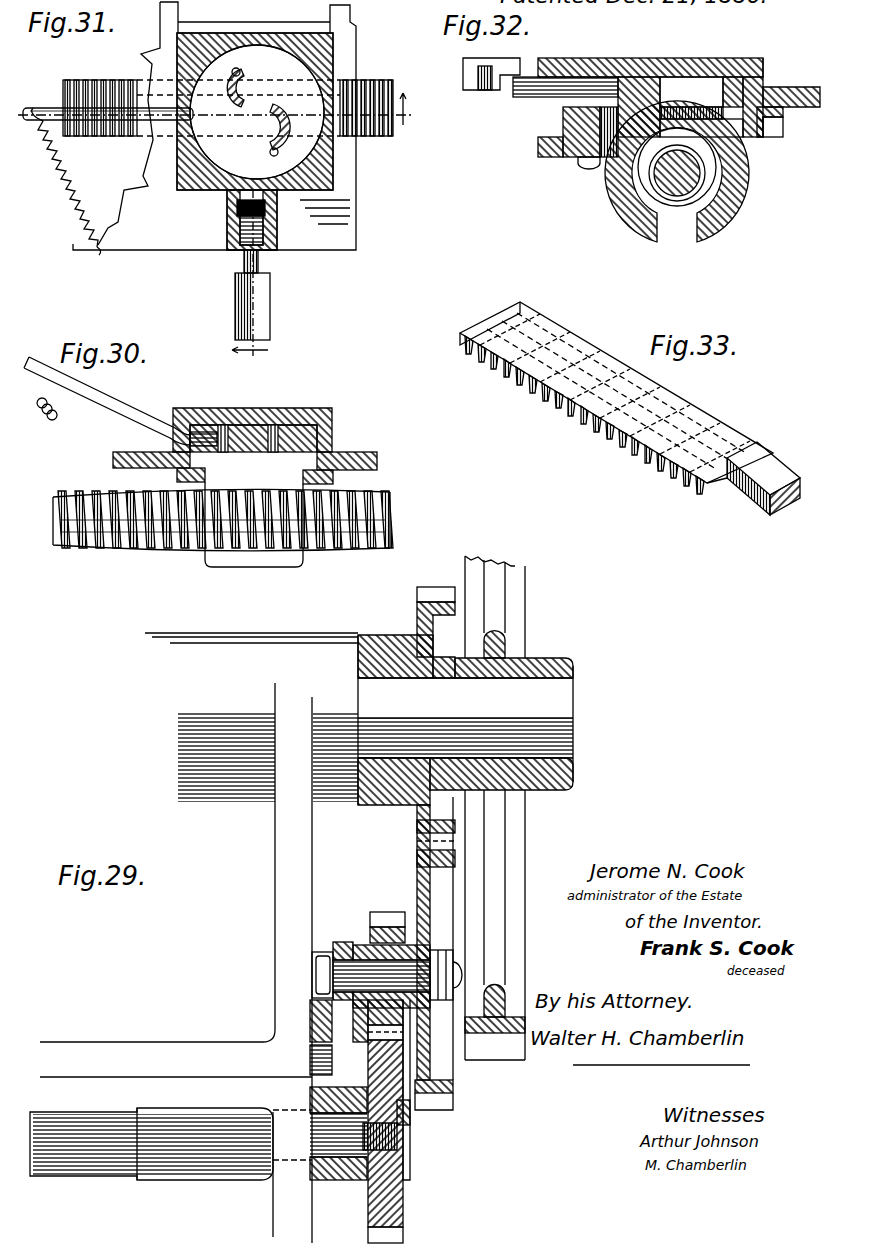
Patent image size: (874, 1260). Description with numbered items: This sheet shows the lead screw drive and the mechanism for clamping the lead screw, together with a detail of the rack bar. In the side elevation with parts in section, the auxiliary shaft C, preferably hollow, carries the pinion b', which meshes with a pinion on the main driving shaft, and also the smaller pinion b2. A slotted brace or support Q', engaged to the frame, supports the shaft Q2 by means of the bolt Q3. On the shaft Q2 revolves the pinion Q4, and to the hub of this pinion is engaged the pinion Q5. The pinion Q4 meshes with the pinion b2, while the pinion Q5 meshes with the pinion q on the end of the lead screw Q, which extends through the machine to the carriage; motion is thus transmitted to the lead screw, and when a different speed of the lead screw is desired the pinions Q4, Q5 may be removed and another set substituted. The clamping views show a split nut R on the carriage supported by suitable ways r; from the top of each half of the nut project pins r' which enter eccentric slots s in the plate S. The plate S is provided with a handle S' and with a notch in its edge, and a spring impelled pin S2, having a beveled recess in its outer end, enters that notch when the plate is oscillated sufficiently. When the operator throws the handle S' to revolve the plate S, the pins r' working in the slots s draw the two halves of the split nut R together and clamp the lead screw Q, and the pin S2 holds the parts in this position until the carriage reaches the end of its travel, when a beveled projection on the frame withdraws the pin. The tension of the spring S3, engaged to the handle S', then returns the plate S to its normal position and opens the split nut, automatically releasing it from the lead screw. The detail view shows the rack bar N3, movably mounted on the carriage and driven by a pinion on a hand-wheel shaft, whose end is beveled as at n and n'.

In FIG. 31, the plate S is at (281, 106).
In FIG. 32, the plate S is at (650, 97).
In FIG. 31, the handle S' is at (203, 123).
In FIG. 30, the handle S' is at (120, 401).
In FIG. 31, the spring impelled pin S2 is at (258, 262).
In FIG. 32, the spring impelled pin S2 is at (532, 85).
In FIG. 31, the spring S3 is at (66, 196).
In FIG. 30, the spring S3 is at (50, 415).
In FIG. 31, the lead screw Q is at (219, 92).
In FIG. 32, the lead screw Q is at (677, 202).
In FIG. 30, the lead screw Q is at (223, 546).
In FIG. 29, the lead screw Q is at (171, 1148).
In FIG. 31, the pins r' is at (307, 131).
In FIG. 32, the pins r' is at (750, 46).
In FIG. 30, the pins r' is at (246, 471).
In FIG. 31, the eccentric slots s is at (258, 133).
In FIG. 32, the eccentric slots s is at (691, 92).
In FIG. 30, the eccentric slots s is at (273, 425).
In FIG. 32, the split nut R is at (748, 170).
In FIG. 30, the split nut R is at (233, 557).
In FIG. 32, the ways r is at (788, 117).
In FIG. 33, the rack bar N3 is at (698, 442).
In FIG. 33, the beveled end n' is at (799, 485).
In FIG. 33, the beveled end n is at (753, 493).
In FIG. 29, the pinion b' is at (520, 808).
In FIG. 29, the smaller pinion b2 is at (439, 604).
In FIG. 29, the auxiliary shaft C is at (465, 720).
In FIG. 29, the slotted brace Q' is at (378, 955).
In FIG. 29, the shaft Q2 is at (312, 1004).
In FIG. 29, the bolt Q3 is at (330, 962).
In FIG. 29, the pinion Q4 is at (417, 862).
In FIG. 29, the pinion Q5 is at (387, 912).
In FIG. 29, the pinion q is at (386, 1200).